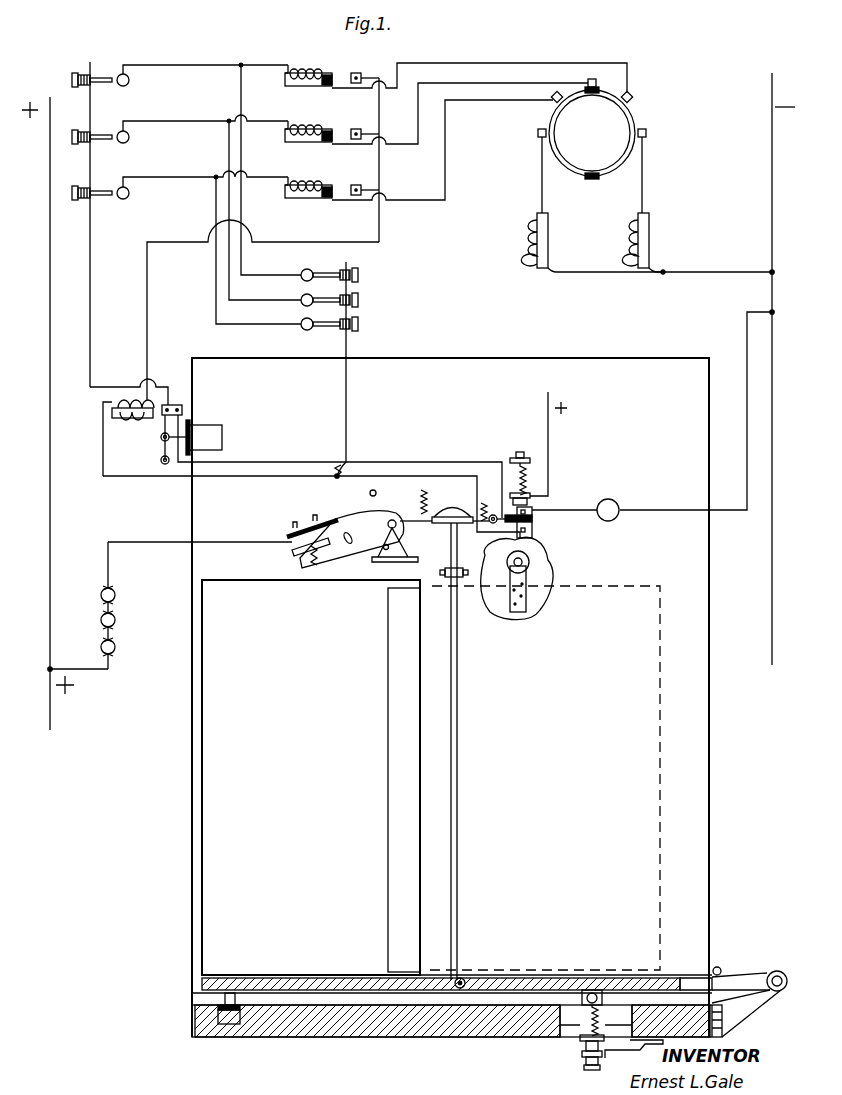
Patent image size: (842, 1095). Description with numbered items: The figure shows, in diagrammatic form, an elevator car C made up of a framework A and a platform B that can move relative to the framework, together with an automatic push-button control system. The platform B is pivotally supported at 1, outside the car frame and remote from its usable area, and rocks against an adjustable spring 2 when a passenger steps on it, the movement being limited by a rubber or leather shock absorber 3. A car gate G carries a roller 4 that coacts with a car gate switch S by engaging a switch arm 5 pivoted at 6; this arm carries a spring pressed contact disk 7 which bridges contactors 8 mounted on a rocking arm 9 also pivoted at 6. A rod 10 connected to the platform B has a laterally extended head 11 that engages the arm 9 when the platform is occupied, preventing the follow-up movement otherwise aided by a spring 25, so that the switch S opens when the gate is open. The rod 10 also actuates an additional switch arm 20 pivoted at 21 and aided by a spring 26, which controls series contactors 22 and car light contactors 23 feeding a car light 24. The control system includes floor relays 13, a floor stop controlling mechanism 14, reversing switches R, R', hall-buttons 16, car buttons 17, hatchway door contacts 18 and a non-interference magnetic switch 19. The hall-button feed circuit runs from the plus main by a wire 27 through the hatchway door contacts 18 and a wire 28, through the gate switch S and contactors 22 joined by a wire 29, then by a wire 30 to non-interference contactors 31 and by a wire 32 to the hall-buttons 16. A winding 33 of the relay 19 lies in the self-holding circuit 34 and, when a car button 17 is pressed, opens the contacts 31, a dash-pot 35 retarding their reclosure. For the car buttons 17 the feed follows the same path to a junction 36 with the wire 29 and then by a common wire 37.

The pivotal support 1 is at (778, 970).
The adjustable spring 2 is at (585, 1040).
The shock absorber 3 is at (218, 1012).
The roller 4 is at (530, 565).
The switch arm 5 is at (350, 570).
The pivot 6 is at (395, 518).
The contact disk 7 is at (298, 550).
The contactors 8 is at (290, 538).
The rocking arm 9 is at (340, 520).
The rod 10 is at (460, 776).
The laterally extended head 11 is at (452, 512).
The floor relays 13 is at (336, 75).
The floor stop controlling mechanism 14 is at (637, 108).
The hall-buttons 16 is at (76, 70).
The car buttons 17 is at (362, 320).
The hatchway door contacts 18 is at (114, 640).
The non-interference magnetic switch 19 is at (133, 423).
The switch arm 20 is at (480, 525).
The pivot 21 is at (508, 490).
The contactors 22 is at (537, 530).
The contactors 23 is at (535, 505).
The car light 24 is at (614, 500).
The spring 25 is at (455, 500).
The spring 26 is at (483, 500).
The wire 27 is at (94, 672).
The wire 28 is at (160, 541).
The wire 29 is at (382, 476).
The wire 30 is at (280, 465).
The non-interference contactors 31 is at (180, 402).
The wire 32 is at (114, 373).
The winding 33 is at (110, 428).
The self-holding circuit 34 is at (152, 480).
The dash-pot 35 is at (210, 425).
The junction 36 is at (345, 470).
The common wire 37 is at (348, 398).
The framework A is at (382, 1028).
The platform B is at (325, 975).
The elevator car C is at (710, 690).
The car gate G is at (311, 777).
The car gate switch S is at (320, 508).
The reversing switch R is at (646, 204).
The reversing switch R' is at (649, 205).